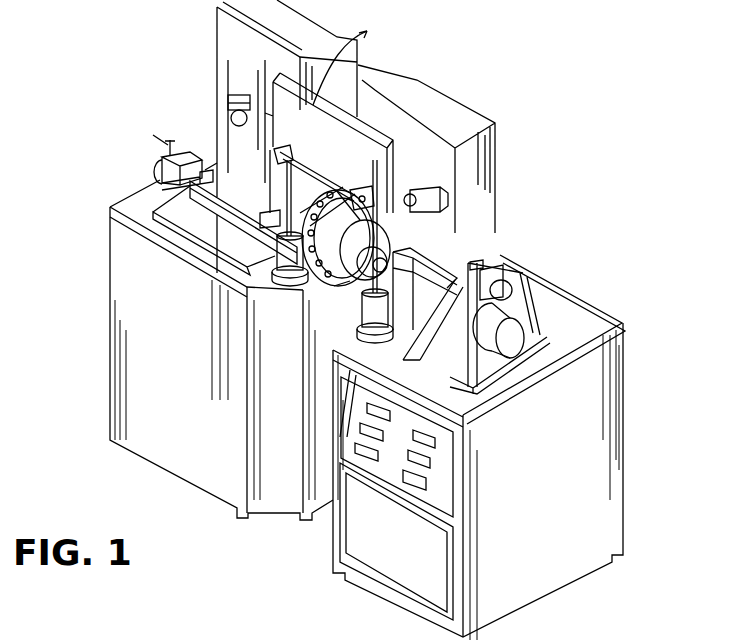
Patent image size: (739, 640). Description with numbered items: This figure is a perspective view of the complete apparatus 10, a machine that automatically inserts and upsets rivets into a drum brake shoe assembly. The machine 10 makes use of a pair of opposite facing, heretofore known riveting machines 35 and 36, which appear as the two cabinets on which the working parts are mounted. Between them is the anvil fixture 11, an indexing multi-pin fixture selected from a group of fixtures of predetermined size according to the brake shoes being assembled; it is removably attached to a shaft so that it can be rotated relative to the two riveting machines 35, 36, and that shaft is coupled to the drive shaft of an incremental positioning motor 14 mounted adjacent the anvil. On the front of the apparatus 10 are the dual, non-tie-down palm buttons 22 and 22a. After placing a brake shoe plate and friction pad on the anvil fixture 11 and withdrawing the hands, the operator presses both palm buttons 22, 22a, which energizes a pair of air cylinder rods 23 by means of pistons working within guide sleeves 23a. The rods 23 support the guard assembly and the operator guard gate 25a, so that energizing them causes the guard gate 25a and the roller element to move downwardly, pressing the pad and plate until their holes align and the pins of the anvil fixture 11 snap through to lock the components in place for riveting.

The apparatus 10 is at (546, 176).
The anvil fixture 11 is at (333, 282).
The incremental positioning motor 14 is at (517, 330).
The palm button 22 is at (228, 100).
The palm button 22a is at (430, 185).
The air cylinder rods 23 is at (287, 197).
The guide sleeves 23a is at (288, 265).
The operator guard gate 25a is at (372, 62).
The riveting machine 35 is at (120, 343).
The riveting machine 36 is at (603, 442).